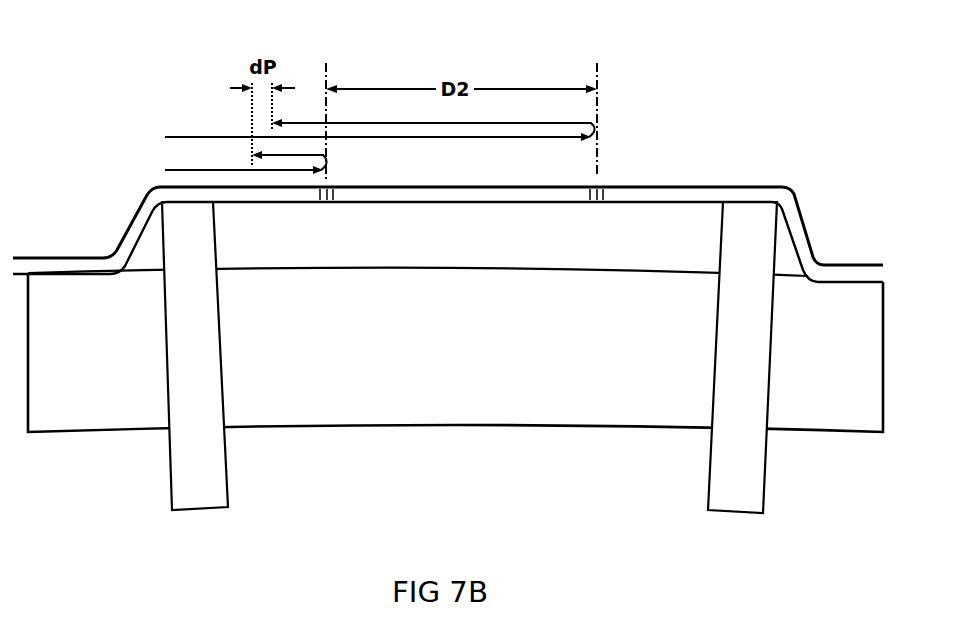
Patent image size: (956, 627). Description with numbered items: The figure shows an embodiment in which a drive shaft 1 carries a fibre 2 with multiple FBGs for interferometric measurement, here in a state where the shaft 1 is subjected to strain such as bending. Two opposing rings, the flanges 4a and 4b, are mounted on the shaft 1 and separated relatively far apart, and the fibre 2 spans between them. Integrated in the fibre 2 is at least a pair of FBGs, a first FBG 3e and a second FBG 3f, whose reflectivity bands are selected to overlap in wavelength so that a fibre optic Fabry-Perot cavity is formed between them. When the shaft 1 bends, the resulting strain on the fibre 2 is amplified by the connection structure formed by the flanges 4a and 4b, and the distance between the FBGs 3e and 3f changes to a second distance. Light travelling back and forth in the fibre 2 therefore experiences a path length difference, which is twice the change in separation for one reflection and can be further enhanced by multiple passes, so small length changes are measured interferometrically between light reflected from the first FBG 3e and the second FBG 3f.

The drive shaft 1 is at (464, 370).
The fibre 2 is at (636, 166).
The first FBG 3e is at (327, 220).
The second FBG 3f is at (597, 220).
The flange 4a is at (195, 356).
The flange 4b is at (742, 357).